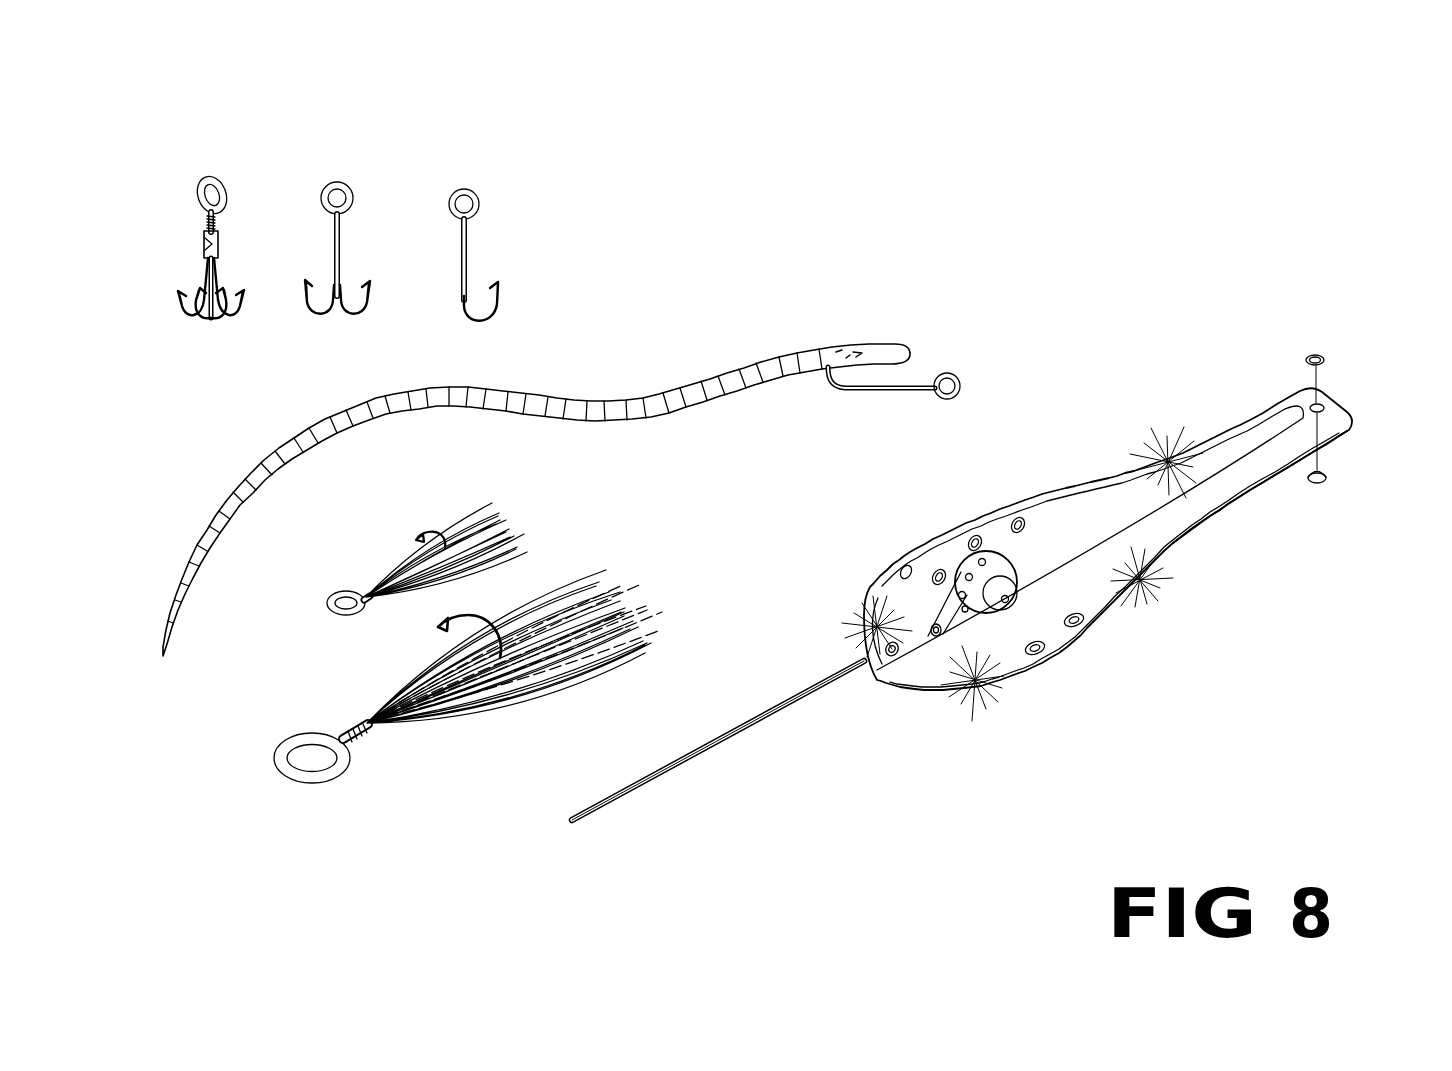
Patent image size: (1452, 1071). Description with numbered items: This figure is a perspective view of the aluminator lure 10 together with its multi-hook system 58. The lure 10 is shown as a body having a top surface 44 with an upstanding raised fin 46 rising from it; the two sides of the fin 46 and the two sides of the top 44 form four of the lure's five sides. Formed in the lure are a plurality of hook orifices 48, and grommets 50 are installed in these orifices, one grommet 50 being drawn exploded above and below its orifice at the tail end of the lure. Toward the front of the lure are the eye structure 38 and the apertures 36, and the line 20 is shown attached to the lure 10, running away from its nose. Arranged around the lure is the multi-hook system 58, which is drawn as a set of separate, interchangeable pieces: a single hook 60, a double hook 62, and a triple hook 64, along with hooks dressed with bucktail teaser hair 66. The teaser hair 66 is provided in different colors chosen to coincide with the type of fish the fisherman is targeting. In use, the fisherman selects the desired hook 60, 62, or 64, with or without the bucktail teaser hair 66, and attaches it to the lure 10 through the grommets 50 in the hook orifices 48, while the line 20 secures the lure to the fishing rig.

The aluminator lure 10 is at (1055, 447).
The line 20 is at (762, 724).
The apertures 36 is at (962, 565).
The eye structure 38 is at (989, 556).
The top surface 44 is at (1247, 479).
The raised fin 46 is at (1233, 428).
The hook orifices 48 is at (1048, 642).
The grommets 50 is at (1325, 354).
The multi-hook system 58 is at (626, 149).
The single hook 60 is at (471, 253).
The double hook 62 is at (346, 236).
The triple hook 64 is at (218, 242).
The bucktail teaser hair 66 is at (425, 718).